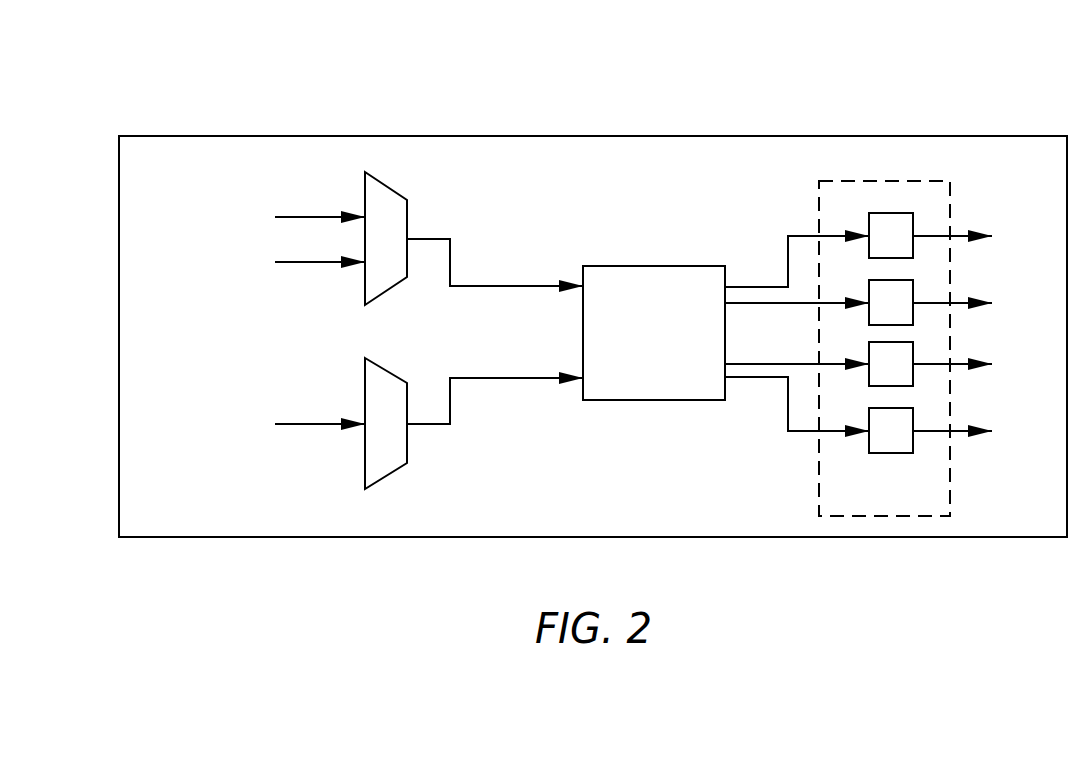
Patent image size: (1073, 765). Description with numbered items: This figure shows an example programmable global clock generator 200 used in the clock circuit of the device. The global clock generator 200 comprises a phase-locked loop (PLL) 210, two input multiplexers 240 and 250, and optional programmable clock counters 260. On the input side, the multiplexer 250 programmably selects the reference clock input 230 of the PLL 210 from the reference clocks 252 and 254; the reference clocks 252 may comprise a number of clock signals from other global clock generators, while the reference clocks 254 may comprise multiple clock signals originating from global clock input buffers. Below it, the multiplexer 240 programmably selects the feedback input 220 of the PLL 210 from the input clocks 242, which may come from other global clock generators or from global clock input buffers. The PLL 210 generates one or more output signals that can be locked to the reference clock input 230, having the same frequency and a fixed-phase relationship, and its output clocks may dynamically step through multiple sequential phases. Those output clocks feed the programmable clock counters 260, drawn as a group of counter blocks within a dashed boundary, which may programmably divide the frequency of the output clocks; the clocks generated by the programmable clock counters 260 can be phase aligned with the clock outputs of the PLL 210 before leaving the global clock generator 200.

The programmable global clock generator 200 is at (980, 93).
The phase-locked loop (PLL) 210 is at (652, 265).
The feedback input 220 is at (515, 380).
The reference clock input 230 is at (515, 289).
The multiplexer 240 is at (385, 370).
The input clocks 242 is at (290, 423).
The multiplexer 250 is at (385, 185).
The reference clocks 252 is at (290, 261).
The reference clocks 254 is at (290, 216).
The programmable clock counters 260 is at (819, 192).